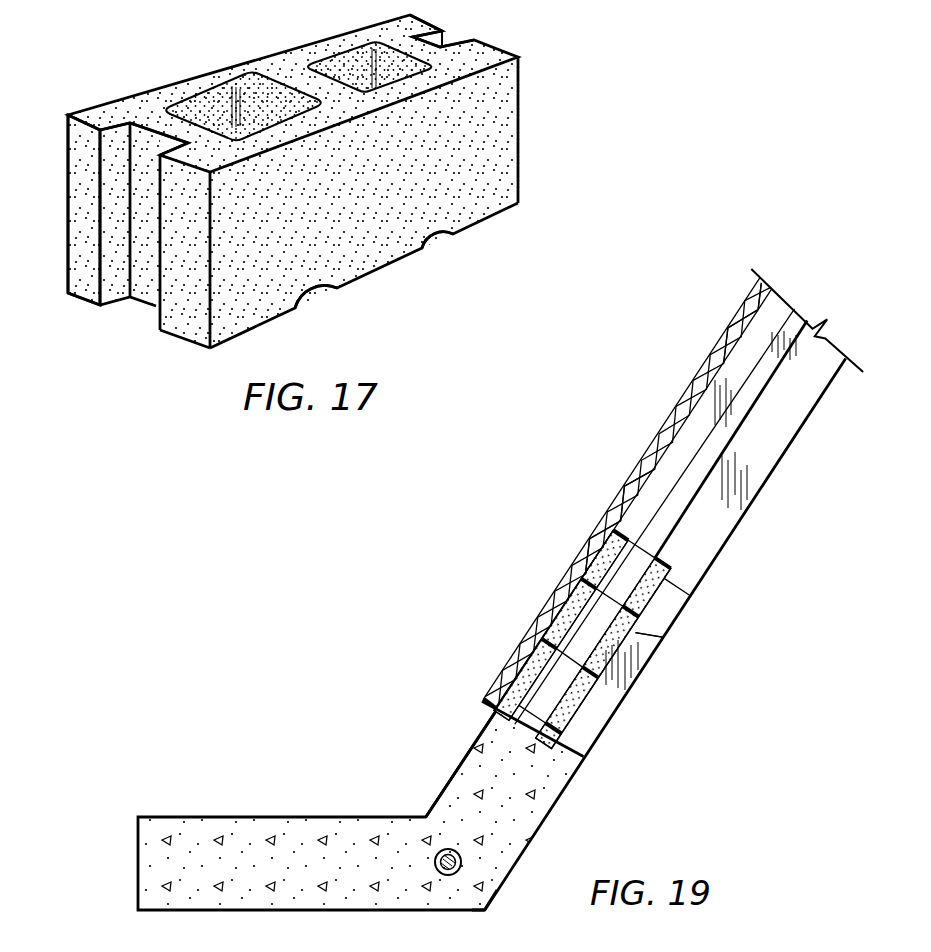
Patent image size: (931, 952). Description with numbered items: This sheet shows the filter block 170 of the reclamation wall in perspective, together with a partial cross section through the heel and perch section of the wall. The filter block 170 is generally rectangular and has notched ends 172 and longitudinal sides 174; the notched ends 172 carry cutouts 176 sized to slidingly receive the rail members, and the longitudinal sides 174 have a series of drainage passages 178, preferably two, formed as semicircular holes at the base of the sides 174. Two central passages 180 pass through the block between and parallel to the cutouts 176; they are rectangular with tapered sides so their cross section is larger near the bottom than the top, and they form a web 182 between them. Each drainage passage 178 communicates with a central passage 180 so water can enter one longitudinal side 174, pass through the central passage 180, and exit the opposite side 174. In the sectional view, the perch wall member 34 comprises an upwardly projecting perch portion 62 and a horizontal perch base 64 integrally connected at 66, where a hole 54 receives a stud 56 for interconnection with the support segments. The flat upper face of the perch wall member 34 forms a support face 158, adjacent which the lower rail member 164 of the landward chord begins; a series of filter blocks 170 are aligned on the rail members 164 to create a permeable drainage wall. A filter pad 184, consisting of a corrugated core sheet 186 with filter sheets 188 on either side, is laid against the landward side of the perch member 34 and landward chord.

In FIG. 17, the filter block 170 is at (487, 102).
In FIG. 19, the filter block 170 is at (655, 560).
In FIG. 17, the notched end 172 is at (192, 318).
In FIG. 17, the longitudinal side 174 is at (370, 201).
In FIG. 19, the longitudinal side 174 is at (603, 535).
In FIG. 17, the cutout 176 is at (143, 290).
In FIG. 17, the drainage passage 178 is at (300, 297).
In FIG. 19, the drainage passage 178 is at (652, 630).
In FIG. 17, the central passage 180 is at (350, 57).
In FIG. 19, the central passage 180 is at (622, 532).
In FIG. 17, the web 182 is at (360, 100).
In FIG. 19, the lower rail member 164 is at (748, 394).
In FIG. 19, the filter pad 184 is at (567, 590).
In FIG. 19, the corrugated core sheet 186 is at (635, 486).
In FIG. 19, the filter sheet 188 is at (747, 313).
In FIG. 19, the support face 158 is at (570, 747).
In FIG. 19, the perch wall member 34 is at (466, 760).
In FIG. 19, the perch portion 62 is at (538, 795).
In FIG. 19, the perch base 64 is at (327, 837).
In FIG. 19, the connection 66 is at (487, 902).
In FIG. 19, the hole 54 is at (442, 872).
In FIG. 19, the stud 56 is at (448, 874).